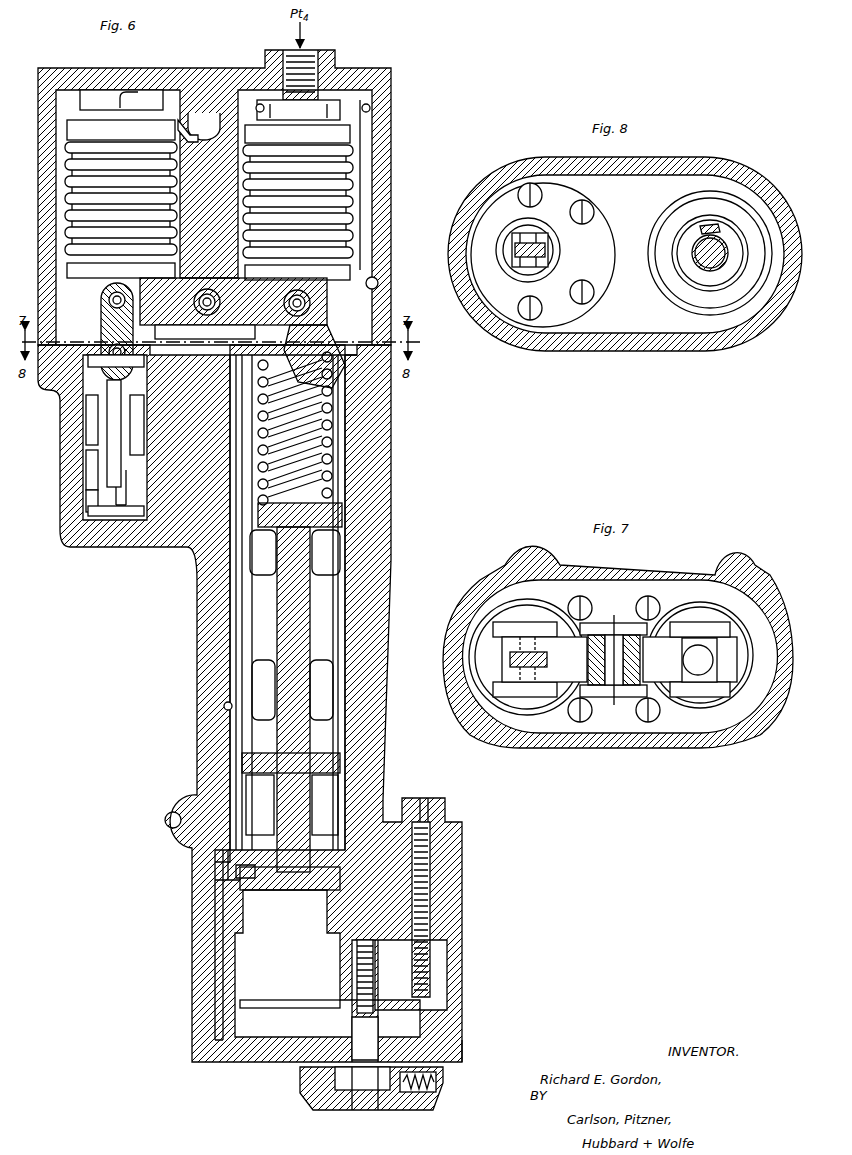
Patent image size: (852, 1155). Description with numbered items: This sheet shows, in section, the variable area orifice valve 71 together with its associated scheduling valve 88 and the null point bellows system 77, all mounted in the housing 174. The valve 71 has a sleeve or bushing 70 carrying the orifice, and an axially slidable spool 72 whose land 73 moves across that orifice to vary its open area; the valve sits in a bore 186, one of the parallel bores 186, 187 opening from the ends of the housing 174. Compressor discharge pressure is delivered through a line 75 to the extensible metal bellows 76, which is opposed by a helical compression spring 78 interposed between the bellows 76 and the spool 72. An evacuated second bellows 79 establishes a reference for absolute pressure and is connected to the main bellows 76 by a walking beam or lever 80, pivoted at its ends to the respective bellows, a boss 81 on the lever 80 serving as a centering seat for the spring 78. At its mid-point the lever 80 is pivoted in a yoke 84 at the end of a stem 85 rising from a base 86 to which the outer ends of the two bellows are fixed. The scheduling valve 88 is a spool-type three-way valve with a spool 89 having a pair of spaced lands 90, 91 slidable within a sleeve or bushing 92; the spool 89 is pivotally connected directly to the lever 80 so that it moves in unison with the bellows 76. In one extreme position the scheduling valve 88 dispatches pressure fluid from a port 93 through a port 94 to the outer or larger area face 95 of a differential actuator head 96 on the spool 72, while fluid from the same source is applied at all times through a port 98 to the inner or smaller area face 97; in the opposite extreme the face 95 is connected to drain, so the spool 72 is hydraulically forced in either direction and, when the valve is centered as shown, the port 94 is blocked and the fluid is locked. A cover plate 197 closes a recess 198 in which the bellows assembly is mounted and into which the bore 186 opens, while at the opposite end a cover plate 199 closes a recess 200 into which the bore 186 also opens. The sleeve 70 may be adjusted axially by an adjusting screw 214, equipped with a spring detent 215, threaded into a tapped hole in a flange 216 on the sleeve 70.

In FIG. 6, the sleeve or bushing 70 is at (345, 540).
In FIG. 8, the sleeve or bushing 70 is at (680, 285).
In FIG. 6, the variable-area orifice valve 71 is at (255, 622).
In FIG. 6, the axially slidable spool 72 is at (298, 588).
In FIG. 6, the land 73 is at (335, 510).
In FIG. 8, the land 73 is at (700, 290).
In FIG. 6, the line 75 is at (300, 95).
In FIG. 6, the extensible metal bellows 76 is at (346, 196).
In FIG. 7, the extensible metal bellows 76 is at (745, 650).
In FIG. 6, the null point bellows system 77 is at (362, 232).
In FIG. 6, the helical compression spring 78 is at (322, 355).
In FIG. 8, the helical compression spring 78 is at (676, 258).
In FIG. 6, the second bellows 79 is at (85, 250).
In FIG. 7, the second bellows 79 is at (484, 648).
In FIG. 6, the walking beam or lever 80 is at (240, 318).
In FIG. 7, the walking beam or lever 80 is at (660, 680).
In FIG. 6, the boss 81 is at (300, 370).
In FIG. 8, the boss 81 is at (696, 248).
In FIG. 6, the yoke 84 is at (117, 331).
In FIG. 7, the yoke 84 is at (628, 690).
In FIG. 6, the stem 85 is at (186, 126).
In FIG. 7, the stem 85 is at (670, 590).
In FIG. 6, the base 86 is at (210, 128).
In FIG. 6, the servo or scheduling valve 88 is at (56, 466).
In FIG. 6, the spool 89 is at (107, 412).
In FIG. 8, the spool 89 is at (548, 250).
In FIG. 6, the land 90 is at (88, 452).
In FIG. 6, the land 91 is at (128, 512).
In FIG. 6, the sleeve or bushing 92 is at (88, 503).
In FIG. 6, the port 93 is at (110, 518).
In FIG. 6, the port 94 is at (98, 432).
In FIG. 6, the outer or larger area face 95 is at (288, 890).
In FIG. 6, the differential actuator head 96 is at (228, 882).
In FIG. 6, the inner or smaller area face 97 is at (236, 872).
In FIG. 6, the port 98 is at (228, 858).
In FIG. 6, the housing 174 is at (380, 438).
In FIG. 6, the bore 186 is at (222, 708).
In FIG. 6, the bore 187 is at (88, 490).
In FIG. 6, the cover plate 197 is at (372, 78).
In FIG. 6, the recess 198 is at (380, 282).
In FIG. 6, the cover plate 199 is at (452, 1052).
In FIG. 6, the recess 200 is at (448, 978).
In FIG. 6, the adjusting screw 214 is at (335, 1079).
In FIG. 6, the spring detent 215 is at (403, 1092).
In FIG. 6, the flange 216 is at (380, 978).